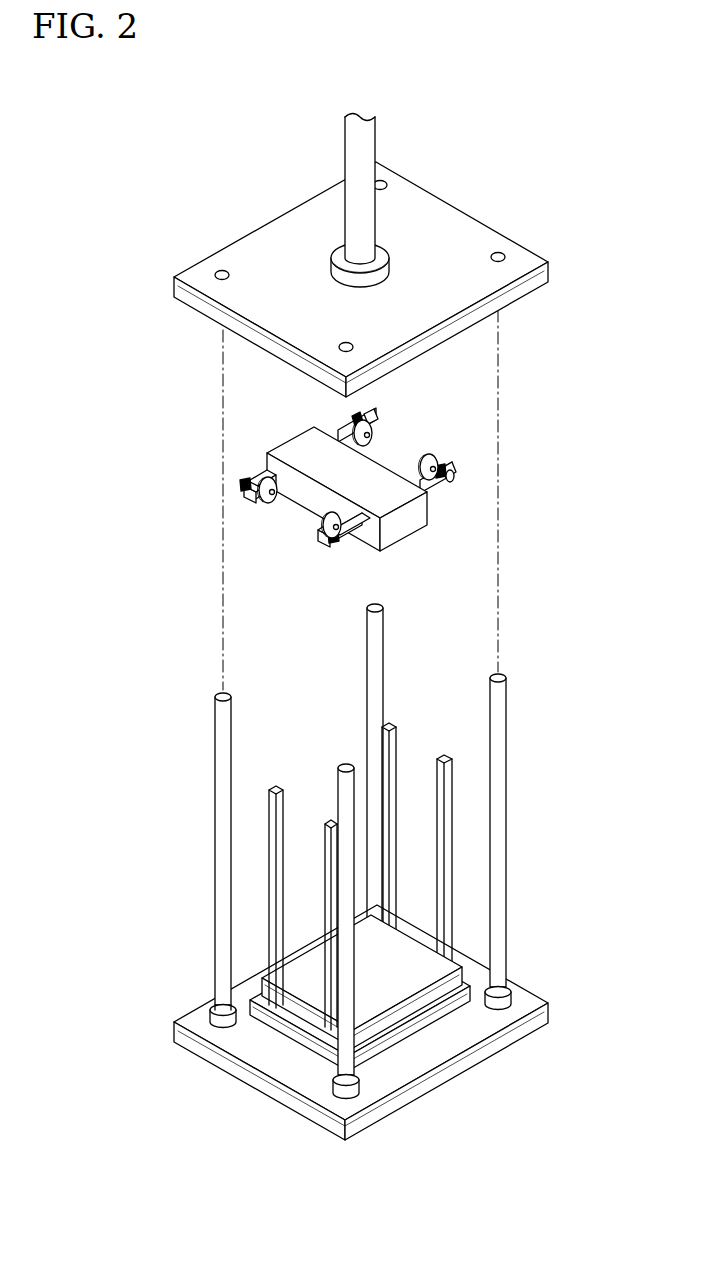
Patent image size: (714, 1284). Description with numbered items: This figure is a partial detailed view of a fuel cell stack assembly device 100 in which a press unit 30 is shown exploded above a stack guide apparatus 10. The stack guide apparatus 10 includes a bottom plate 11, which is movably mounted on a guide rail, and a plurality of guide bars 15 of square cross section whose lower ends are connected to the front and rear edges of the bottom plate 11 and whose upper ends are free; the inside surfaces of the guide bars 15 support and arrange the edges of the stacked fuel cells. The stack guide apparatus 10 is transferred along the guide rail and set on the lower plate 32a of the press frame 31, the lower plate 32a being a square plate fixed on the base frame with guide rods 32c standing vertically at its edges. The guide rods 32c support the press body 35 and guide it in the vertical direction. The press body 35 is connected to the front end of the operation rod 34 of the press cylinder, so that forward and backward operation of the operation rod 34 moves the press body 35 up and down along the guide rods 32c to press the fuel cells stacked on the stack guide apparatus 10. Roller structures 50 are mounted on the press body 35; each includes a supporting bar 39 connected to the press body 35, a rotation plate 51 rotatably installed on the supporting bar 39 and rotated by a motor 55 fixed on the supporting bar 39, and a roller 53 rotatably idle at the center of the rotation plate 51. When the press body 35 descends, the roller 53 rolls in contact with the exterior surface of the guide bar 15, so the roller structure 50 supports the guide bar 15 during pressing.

The pressing apparatus 100 is at (458, 77).
The upper pressing unit 30 is at (186, 364).
The operation rod 34 is at (355, 158).
The press body 35 is at (290, 368).
The roller structure 50 is at (256, 511).
The rotation plate 51 is at (262, 486).
The roller 53 is at (277, 497).
The motor 55 is at (245, 487).
The supporting bar 39 is at (252, 497).
The press frame 31 is at (517, 968).
The lower plate 32a is at (543, 1017).
The guide rod 32c is at (218, 800).
The guide bar 15 is at (328, 957).
The stack guide apparatus 10 is at (274, 1044).
The bottom plate 11 is at (433, 1002).